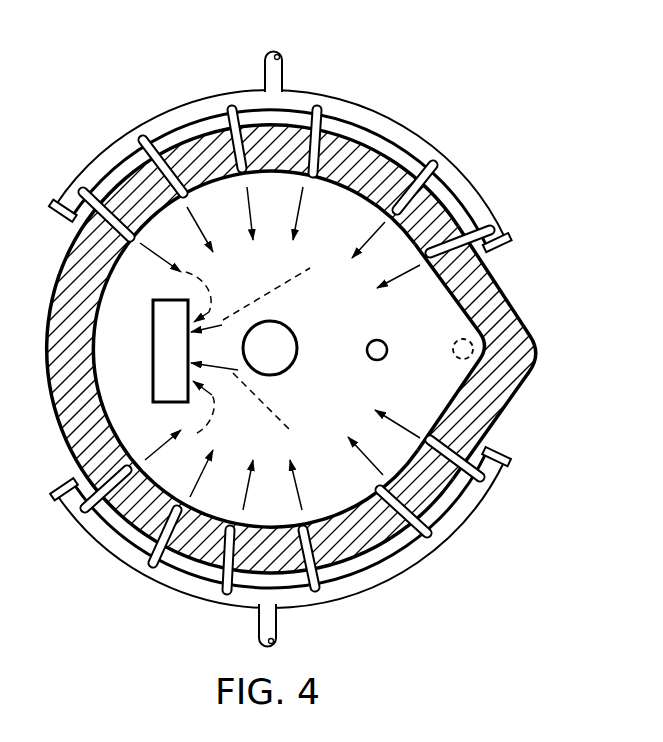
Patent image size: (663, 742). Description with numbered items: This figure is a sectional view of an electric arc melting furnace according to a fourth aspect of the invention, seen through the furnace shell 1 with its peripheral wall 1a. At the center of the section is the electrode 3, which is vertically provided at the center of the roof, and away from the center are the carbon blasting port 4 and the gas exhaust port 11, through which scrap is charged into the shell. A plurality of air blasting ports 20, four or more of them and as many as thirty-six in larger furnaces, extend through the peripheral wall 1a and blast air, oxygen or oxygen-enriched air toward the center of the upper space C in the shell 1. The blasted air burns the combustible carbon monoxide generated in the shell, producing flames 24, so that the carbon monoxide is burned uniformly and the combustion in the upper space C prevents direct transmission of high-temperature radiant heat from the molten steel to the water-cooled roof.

The furnace shell 1 is at (513, 380).
The peripheral wall 1a is at (513, 300).
The electrode 3 is at (297, 333).
The carbon blasting port 4 is at (385, 343).
The gas exhaust port 11 is at (160, 366).
The air blasting ports 20 is at (227, 108).
The flames 24 is at (247, 306).
The upper space C is at (341, 376).